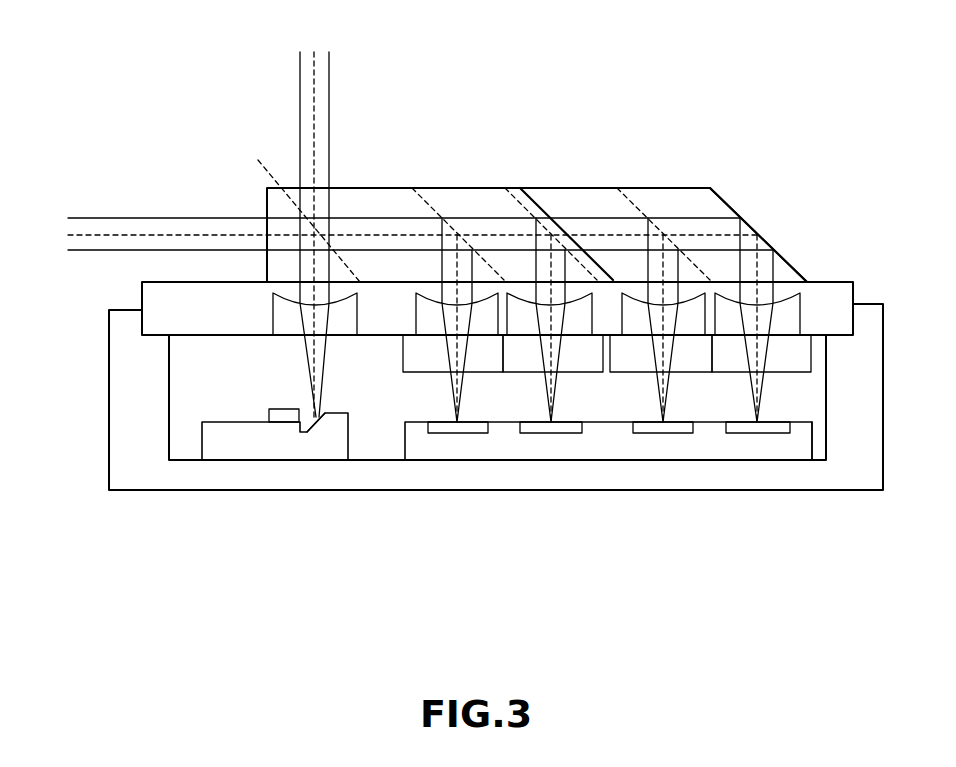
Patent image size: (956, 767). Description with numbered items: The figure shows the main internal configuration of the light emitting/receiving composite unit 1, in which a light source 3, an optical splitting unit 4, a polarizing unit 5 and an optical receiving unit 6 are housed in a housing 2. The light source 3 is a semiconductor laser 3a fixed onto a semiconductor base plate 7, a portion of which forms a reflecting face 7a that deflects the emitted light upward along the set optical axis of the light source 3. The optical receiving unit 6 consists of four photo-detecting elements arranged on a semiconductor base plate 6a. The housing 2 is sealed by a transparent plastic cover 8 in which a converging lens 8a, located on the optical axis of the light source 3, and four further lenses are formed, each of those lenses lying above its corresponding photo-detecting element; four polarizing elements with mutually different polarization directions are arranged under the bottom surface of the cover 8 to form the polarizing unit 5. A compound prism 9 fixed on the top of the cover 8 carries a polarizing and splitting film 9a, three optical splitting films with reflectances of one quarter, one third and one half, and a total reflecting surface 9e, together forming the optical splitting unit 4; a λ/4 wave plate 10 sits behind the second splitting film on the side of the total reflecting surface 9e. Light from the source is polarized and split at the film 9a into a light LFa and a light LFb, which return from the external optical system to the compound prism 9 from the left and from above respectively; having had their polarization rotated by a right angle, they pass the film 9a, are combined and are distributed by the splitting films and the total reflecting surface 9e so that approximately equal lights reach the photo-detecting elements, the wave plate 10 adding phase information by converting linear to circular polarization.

The light emitting/receiving composite unit 1 is at (753, 113).
The housing 2 is at (109, 405).
The light source 3 is at (265, 454).
The semiconductor laser 3a is at (285, 436).
The optical splitting unit 4 is at (597, 172).
The polarizing unit 5 is at (652, 381).
The optical receiving unit 6 is at (665, 479).
The semiconductor base plate 6a is at (803, 438).
The semiconductor base plate 7 is at (215, 448).
The reflecting face 7a is at (316, 433).
The cover 8 is at (150, 298).
The lens 8a is at (277, 318).
The compound prism 9 is at (372, 190).
The polarizing and splitting film 9a is at (300, 207).
The total reflecting surface 9e is at (716, 188).
The λ/4 wave plate 10 is at (533, 200).
The light LFa is at (395, 235).
The light LFb is at (309, 222).